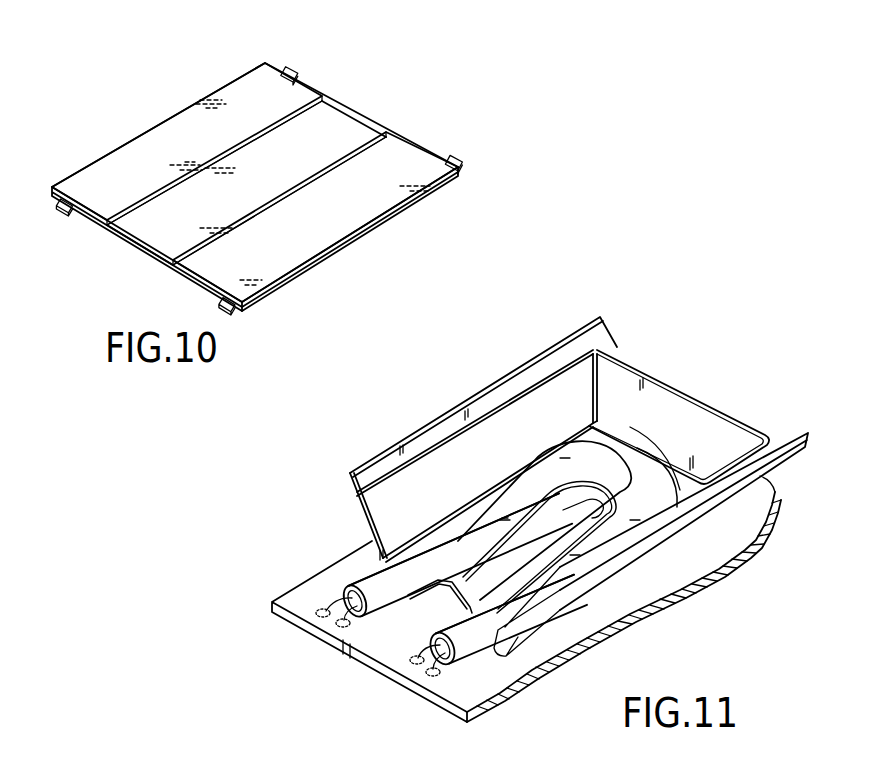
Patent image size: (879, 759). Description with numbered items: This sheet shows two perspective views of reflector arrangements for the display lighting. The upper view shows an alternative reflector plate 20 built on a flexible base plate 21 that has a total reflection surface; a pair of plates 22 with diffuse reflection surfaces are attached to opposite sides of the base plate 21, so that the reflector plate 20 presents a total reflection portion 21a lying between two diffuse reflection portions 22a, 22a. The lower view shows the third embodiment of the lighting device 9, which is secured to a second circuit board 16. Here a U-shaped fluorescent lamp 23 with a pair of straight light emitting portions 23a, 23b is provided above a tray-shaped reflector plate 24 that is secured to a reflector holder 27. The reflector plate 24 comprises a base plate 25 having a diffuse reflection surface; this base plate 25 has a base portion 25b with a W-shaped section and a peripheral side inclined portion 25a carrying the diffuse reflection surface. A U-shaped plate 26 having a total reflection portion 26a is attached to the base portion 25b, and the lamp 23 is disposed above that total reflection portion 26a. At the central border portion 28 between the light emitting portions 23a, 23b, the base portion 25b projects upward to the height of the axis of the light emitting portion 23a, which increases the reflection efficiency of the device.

In FIG. 10, the reflector plate 20 is at (333, 70).
In FIG. 10, the flexible base plate 21 is at (163, 232).
In FIG. 10, the total reflection portion 21a is at (345, 130).
In FIG. 10, the plates having diffuse reflection surfaces 22 is at (102, 175).
In FIG. 10, the diffuse reflection portions 22a is at (167, 143).
In FIG. 11, the lighting device 9 is at (404, 427).
In FIG. 11, the second circuit board 16 is at (638, 592).
In FIG. 11, the U-shaped fluorescent lamp 23 is at (367, 580).
In FIG. 11, the light emitting portion 23a is at (447, 538).
In FIG. 11, the light emitting portion 23b is at (525, 590).
In FIG. 11, the tray-shaped reflector plate 24 is at (690, 393).
In FIG. 11, the base plate 25 is at (463, 418).
In FIG. 11, the peripheral side inclined portion 25a is at (578, 390).
In FIG. 11, the base portion 25b is at (585, 513).
In FIG. 11, the U-shaped plate 26 is at (700, 473).
In FIG. 11, the total reflection portion 26a is at (690, 478).
In FIG. 11, the reflector holder 27 is at (757, 487).
In FIG. 11, the central border portion 28 is at (438, 594).